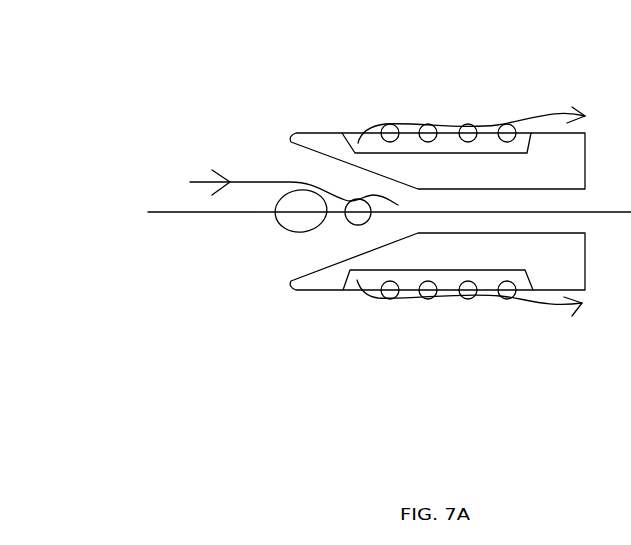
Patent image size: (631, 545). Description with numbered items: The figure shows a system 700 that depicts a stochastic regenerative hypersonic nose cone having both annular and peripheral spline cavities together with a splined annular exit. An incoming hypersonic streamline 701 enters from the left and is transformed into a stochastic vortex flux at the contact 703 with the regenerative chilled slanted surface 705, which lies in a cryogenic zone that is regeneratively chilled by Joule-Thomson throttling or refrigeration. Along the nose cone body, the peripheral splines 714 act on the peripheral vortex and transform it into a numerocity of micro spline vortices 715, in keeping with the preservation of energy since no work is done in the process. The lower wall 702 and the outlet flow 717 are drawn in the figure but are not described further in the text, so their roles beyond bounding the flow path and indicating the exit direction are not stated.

The system 700 is at (202, 305).
The hypersonic streamline 701 is at (190, 182).
The lower body wall 702 is at (295, 283).
The contact 703 is at (318, 158).
The regenerative chilled slanted surface 705 is at (497, 163).
The peripheral splines 714 is at (347, 277).
The spline vortices 715 is at (437, 290).
The outlet flow arrow 717 is at (575, 308).